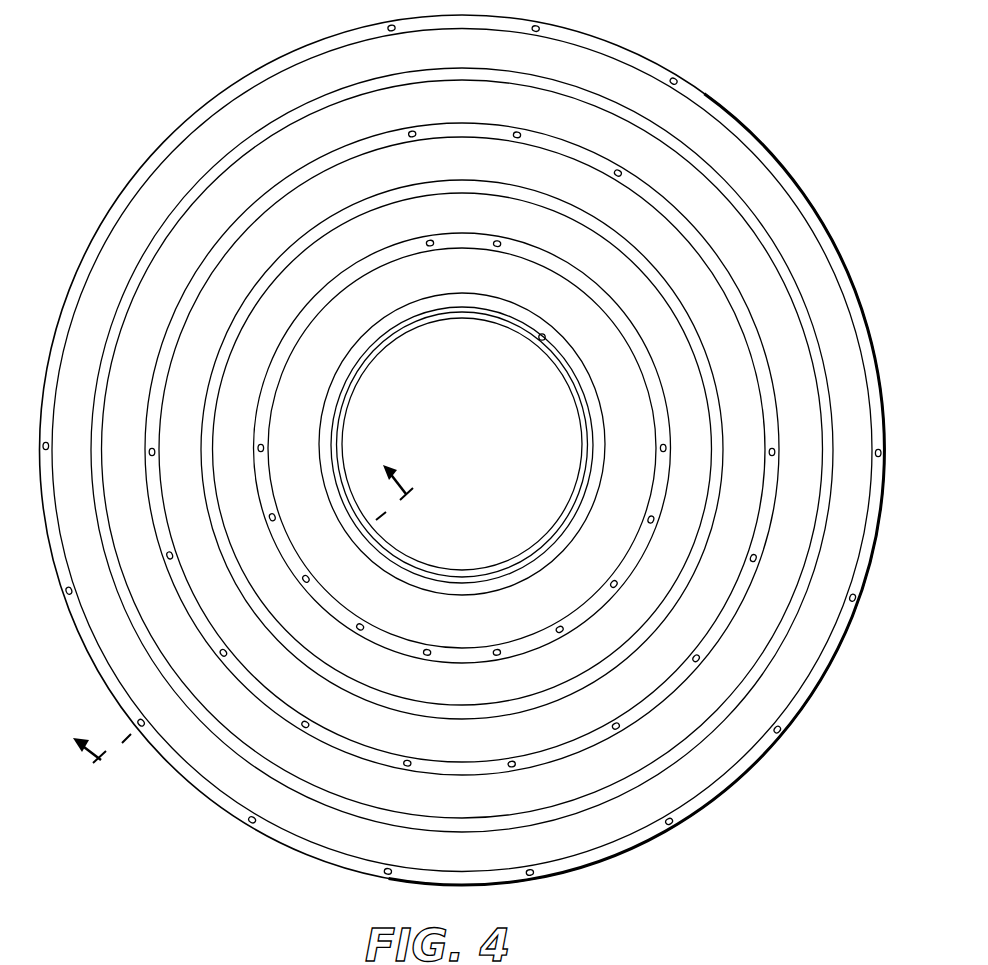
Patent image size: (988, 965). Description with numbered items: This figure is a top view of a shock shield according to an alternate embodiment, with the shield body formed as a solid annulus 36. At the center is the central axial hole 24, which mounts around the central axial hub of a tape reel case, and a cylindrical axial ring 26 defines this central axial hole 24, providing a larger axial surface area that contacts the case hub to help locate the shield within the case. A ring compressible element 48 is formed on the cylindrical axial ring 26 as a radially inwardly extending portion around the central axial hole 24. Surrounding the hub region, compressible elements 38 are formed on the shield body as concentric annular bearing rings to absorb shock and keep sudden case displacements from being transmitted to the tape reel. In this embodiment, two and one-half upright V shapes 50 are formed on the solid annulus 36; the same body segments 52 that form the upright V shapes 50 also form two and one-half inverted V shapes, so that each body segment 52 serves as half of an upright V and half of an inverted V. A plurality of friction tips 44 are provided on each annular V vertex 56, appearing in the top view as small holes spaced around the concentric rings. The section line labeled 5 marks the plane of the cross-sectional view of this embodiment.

The central axial hole 24 is at (408, 352).
The cylindrical axial ring 26 is at (537, 342).
The solid annulus 36 is at (271, 840).
The compressible elements 38 is at (717, 795).
The friction tips 44 is at (387, 868).
The ring compressible element 48 is at (570, 397).
The upright V shapes 50 is at (222, 762).
The body segments 52 is at (550, 730).
The annular V vertex 56 is at (320, 797).
The section line 5- 5 is at (255, 646).